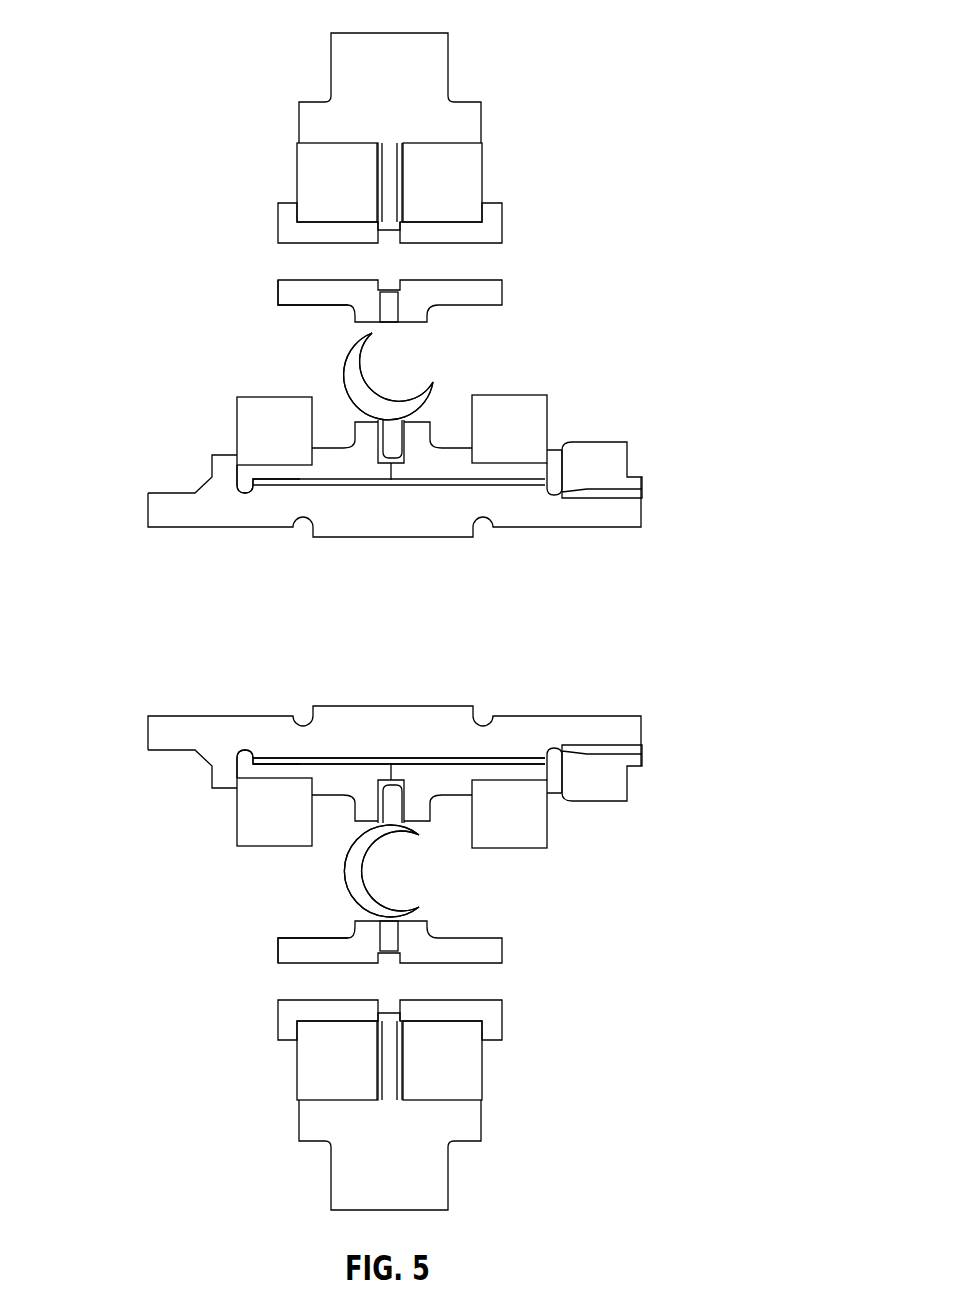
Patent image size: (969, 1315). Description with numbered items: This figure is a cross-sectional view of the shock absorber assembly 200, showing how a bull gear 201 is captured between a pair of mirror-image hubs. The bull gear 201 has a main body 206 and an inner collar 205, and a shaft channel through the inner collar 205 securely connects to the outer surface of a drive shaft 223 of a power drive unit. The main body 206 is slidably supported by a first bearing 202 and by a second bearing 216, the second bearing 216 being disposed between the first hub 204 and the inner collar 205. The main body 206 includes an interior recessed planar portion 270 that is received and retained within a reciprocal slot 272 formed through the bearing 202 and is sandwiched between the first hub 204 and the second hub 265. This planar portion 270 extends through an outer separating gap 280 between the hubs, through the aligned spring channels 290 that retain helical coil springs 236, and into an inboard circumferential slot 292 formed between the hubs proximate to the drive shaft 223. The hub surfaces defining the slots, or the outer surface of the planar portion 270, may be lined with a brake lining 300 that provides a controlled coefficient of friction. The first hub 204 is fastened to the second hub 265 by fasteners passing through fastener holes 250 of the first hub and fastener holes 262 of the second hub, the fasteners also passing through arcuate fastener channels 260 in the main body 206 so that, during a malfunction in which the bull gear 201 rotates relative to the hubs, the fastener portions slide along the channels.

The shock absorber assembly 200 is at (228, 60).
The bull gear 201 is at (465, 37).
The first bearing 202 is at (466, 171).
The first hub 204 is at (492, 297).
The inner collar 205 is at (612, 464).
The main body 206 is at (387, 143).
The second bearing 216 is at (530, 405).
The drive shaft 223 is at (173, 530).
The springs 236 is at (338, 379).
The fastener holes 250 is at (312, 260).
The fastener channels 260 is at (390, 980).
The fastener holes 262 is at (474, 257).
The second hub 265 is at (298, 298).
The interior recessed planar portion 270 is at (387, 182).
The reciprocal slot 272 is at (352, 150).
The outer separating gap 280 is at (405, 238).
The aligned spring channels 290 is at (403, 362).
The inboard circumferential slot 292 is at (343, 445).
The brake lining 300 is at (372, 238).